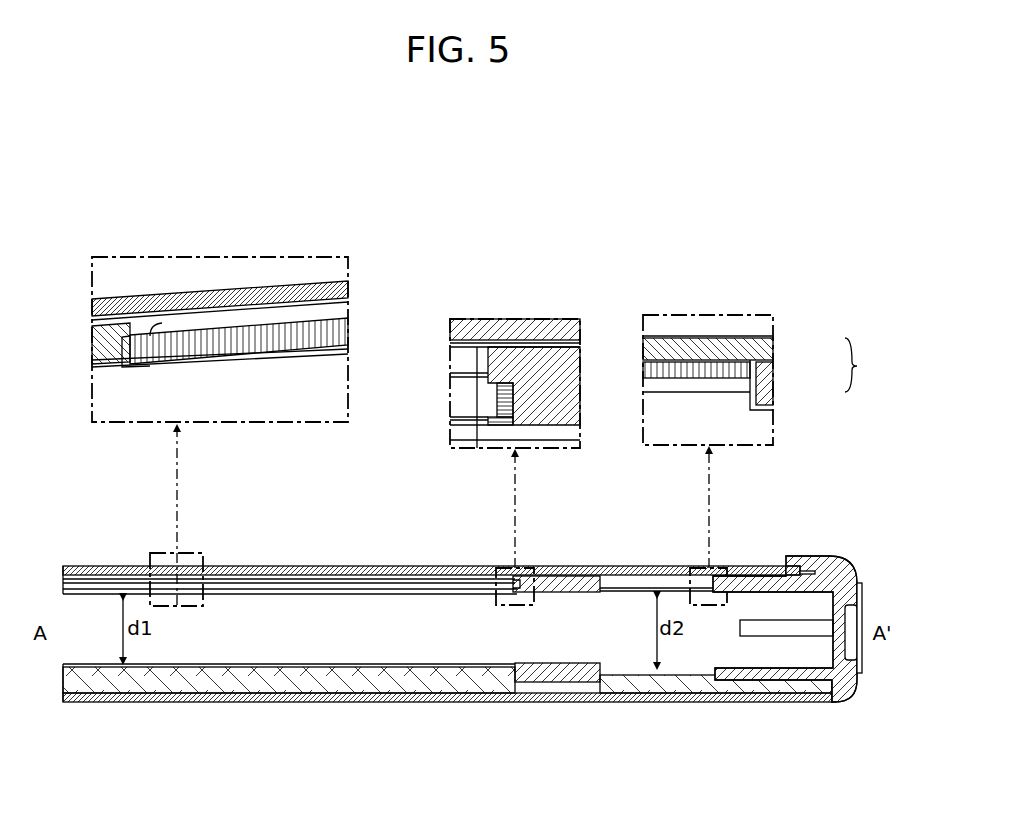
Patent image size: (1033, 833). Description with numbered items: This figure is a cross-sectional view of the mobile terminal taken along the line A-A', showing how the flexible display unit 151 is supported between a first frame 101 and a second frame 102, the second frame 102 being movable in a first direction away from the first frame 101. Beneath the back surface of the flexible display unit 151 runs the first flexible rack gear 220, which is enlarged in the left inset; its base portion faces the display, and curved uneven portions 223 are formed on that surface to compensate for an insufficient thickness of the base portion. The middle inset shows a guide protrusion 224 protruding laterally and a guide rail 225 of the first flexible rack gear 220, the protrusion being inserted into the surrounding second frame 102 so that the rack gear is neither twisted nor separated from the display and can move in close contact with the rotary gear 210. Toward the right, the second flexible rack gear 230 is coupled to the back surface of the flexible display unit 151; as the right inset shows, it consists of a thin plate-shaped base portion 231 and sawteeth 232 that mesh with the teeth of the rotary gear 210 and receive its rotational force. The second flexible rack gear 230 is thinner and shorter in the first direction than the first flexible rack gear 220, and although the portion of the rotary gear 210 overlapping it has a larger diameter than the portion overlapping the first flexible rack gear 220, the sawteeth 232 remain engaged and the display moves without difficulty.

The first frame 101 is at (455, 678).
The second frame 102 is at (831, 673).
The flexible display unit 151 is at (105, 316).
The rotary gear 210 is at (100, 394).
The first flexible rack gear 220 is at (318, 590).
The curved uneven portions 223 is at (340, 312).
The guide protrusion 224 is at (143, 366).
The guide rail 225 is at (508, 405).
The second flexible rack gear 230 is at (633, 578).
The plate-shaped base portion 231 is at (752, 350).
The sawteeth 232 is at (738, 386).